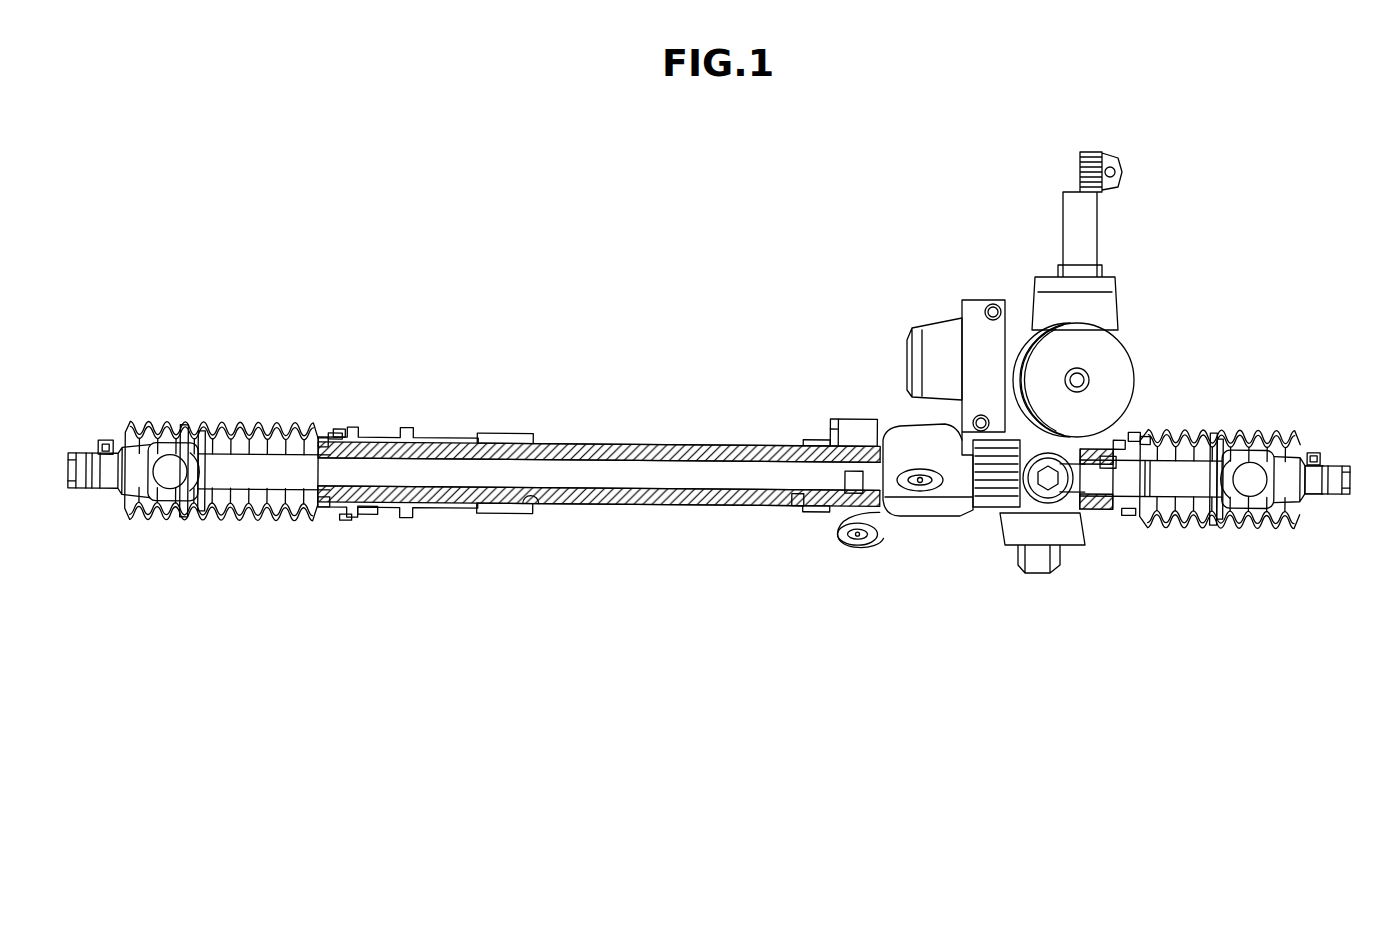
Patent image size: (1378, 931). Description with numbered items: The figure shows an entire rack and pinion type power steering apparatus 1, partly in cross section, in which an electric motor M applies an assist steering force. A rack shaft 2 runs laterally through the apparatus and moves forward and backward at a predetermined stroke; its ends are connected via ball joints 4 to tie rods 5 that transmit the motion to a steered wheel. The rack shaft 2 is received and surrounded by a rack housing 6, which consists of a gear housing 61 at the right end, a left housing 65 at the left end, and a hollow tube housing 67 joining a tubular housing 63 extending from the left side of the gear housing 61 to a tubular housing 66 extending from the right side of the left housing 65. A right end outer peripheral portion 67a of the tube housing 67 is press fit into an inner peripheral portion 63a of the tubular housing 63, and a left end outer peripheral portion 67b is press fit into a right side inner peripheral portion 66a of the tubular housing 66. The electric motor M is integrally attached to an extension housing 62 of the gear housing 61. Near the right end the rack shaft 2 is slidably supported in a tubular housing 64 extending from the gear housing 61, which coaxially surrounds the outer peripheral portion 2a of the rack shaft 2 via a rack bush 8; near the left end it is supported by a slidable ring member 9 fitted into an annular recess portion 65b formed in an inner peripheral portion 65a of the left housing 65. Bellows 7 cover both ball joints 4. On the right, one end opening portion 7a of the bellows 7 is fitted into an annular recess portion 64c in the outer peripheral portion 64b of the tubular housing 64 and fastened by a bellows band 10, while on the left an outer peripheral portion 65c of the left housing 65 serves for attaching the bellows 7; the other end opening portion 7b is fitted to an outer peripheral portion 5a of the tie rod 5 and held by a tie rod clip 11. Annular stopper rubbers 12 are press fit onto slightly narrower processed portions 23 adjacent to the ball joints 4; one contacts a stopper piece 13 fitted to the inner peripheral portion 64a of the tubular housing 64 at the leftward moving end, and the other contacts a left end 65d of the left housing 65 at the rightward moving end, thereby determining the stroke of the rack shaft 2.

The power steering apparatus 1 is at (615, 291).
The rack shaft 2 is at (620, 497).
The outer peripheral portion 2a is at (1147, 512).
The ball joint 4 is at (163, 478).
The tie rod 5 is at (85, 480).
The outer peripheral portion 5a is at (103, 490).
The rack housing 6 is at (584, 442).
The bellows 7 is at (208, 421).
The one end opening portion 7a is at (265, 486).
The other end opening portion 7b is at (92, 462).
The rack bush 8 is at (1098, 530).
The slidable ring member 9 is at (344, 519).
The bellows band 10 is at (345, 430).
The tie rod clip 11 is at (110, 440).
The stopper rubber 12 is at (201, 490).
The stopper piece 13 is at (1110, 452).
The processed portion 23 is at (185, 422).
The gear housing 61 is at (960, 520).
The extension housing 62 is at (966, 308).
The tubular housing 63 is at (817, 512).
The inner peripheral portion 63a is at (798, 494).
The tubular housing 64 is at (1110, 502).
The inner peripheral portion 64a is at (1127, 508).
The outer peripheral portion 64b is at (1118, 432).
The annular recess portion 64c is at (1150, 430).
The left housing 65 is at (466, 515).
The inner peripheral portion 65a is at (366, 513).
The annular recess portion 65b is at (326, 495).
The outer peripheral portion 65c is at (337, 431).
The left end 65d is at (317, 437).
The tubular housing 66 is at (522, 511).
The inner peripheral portion 66a is at (536, 500).
The hollow tube housing 67 is at (660, 502).
The right end outer peripheral portion 67a is at (812, 434).
The left end outer peripheral portion 67b is at (500, 430).
The electric motor M is at (1052, 347).